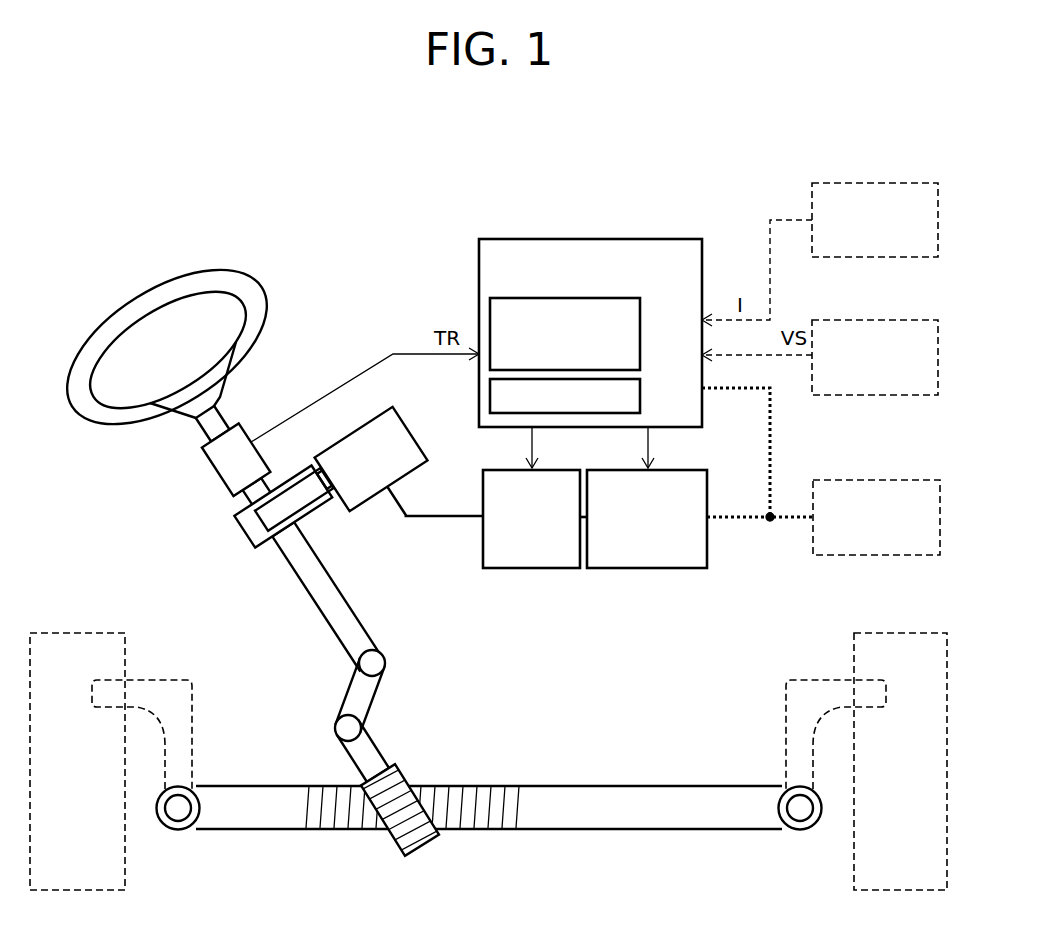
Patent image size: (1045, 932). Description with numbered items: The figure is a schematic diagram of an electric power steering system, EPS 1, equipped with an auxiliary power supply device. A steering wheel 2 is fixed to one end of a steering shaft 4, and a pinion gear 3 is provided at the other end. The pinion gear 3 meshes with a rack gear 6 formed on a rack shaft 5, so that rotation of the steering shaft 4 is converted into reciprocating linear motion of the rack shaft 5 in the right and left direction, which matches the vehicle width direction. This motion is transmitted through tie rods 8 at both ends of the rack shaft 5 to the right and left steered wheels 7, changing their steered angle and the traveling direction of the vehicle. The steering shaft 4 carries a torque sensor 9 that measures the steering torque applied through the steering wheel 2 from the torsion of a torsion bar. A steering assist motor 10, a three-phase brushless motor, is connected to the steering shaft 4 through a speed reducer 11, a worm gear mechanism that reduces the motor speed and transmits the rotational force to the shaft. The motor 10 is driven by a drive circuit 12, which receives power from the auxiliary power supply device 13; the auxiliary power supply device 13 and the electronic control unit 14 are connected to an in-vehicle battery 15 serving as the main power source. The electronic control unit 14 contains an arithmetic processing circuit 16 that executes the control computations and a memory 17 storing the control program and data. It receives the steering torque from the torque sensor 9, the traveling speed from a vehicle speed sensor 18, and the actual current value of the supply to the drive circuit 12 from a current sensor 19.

The electric power steering system 1 is at (73, 307).
The steering wheel 2 is at (262, 289).
The pinion gear 3 is at (390, 769).
The steering shaft 4 is at (318, 608).
The rack shaft 5 is at (627, 786).
The rack gear 6 is at (497, 790).
The steered wheels 7 is at (78, 633).
The tie rods 8 is at (192, 713).
The torque sensor 9 is at (218, 472).
The steering assist motor 10 is at (414, 437).
The speed reducer 11 is at (247, 535).
The drive circuit 12 is at (528, 568).
The auxiliary power supply device 13 is at (642, 568).
The electronic control unit 14 is at (650, 238).
The in-vehicle battery 15 is at (874, 480).
The arithmetic processing circuit 16 is at (642, 343).
The memory 17 is at (642, 396).
The vehicle speed sensor 18 is at (874, 320).
The current sensor 19 is at (874, 183).